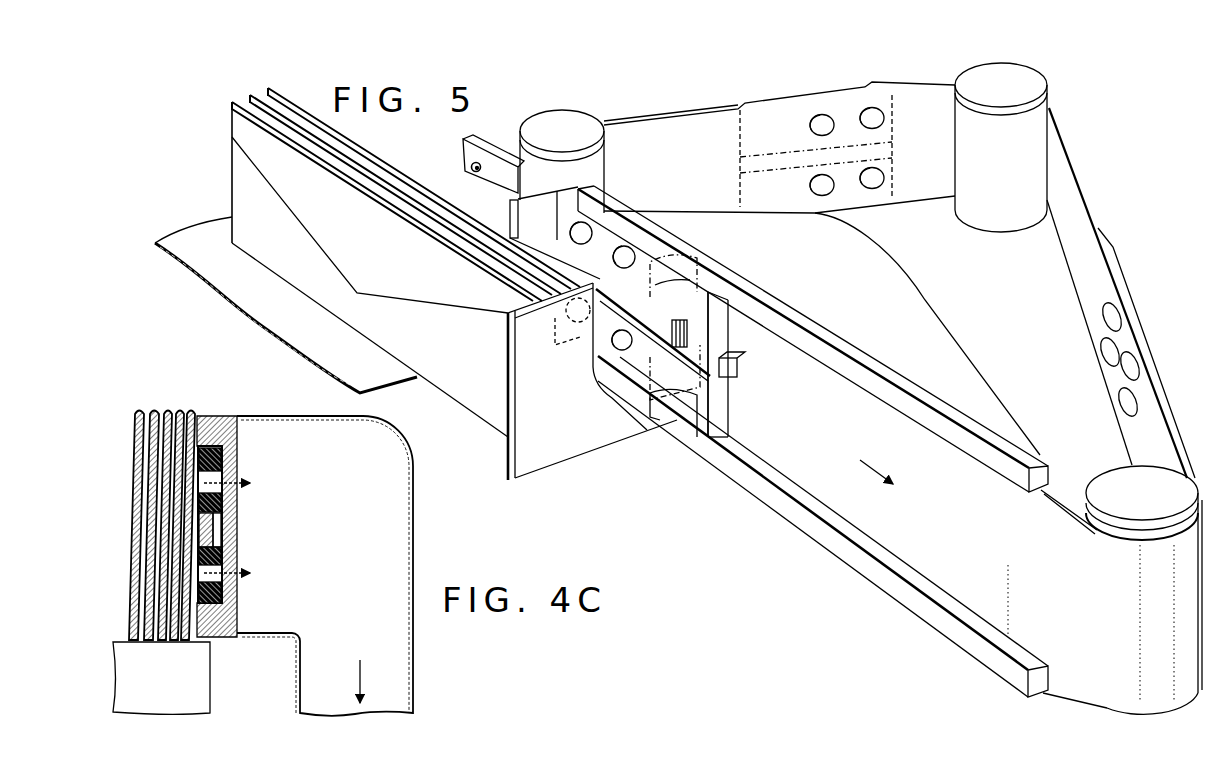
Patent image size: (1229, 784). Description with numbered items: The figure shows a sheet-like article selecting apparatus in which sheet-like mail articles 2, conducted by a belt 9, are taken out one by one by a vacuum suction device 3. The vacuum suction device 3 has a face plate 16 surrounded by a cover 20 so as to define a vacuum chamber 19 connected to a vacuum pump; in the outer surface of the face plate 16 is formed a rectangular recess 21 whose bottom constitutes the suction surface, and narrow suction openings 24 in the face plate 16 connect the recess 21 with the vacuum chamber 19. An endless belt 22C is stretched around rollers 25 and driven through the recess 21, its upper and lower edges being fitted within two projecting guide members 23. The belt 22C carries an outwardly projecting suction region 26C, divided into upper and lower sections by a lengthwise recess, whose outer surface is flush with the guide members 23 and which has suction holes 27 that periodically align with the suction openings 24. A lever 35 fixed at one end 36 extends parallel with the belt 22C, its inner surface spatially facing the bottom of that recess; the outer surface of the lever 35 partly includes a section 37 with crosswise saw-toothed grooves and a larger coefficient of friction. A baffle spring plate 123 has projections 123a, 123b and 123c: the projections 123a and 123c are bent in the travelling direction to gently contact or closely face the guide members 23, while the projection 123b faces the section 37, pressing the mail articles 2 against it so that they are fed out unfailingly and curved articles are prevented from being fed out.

In FIG. 5, the sheet-like mail articles 2 is at (386, 171).
In FIG. 4C, the sheet-like mail articles 2 is at (153, 406).
In FIG. 5, the vacuum suction device 3 is at (914, 299).
In FIG. 4C, the vacuum suction device 3 is at (335, 547).
In FIG. 5, the belt 9 is at (300, 338).
In FIG. 4C, the belt 9 is at (205, 700).
In FIG. 4C, the face plate 16 is at (272, 455).
In FIG. 4C, the vacuum chamber 19 is at (337, 420).
In FIG. 4C, the cover 20 is at (302, 417).
In FIG. 4C, the rectangular recess 21 is at (221, 464).
In FIG. 5, the endless belt 22C is at (913, 560).
In FIG. 5, the guide members 23 is at (960, 440).
In FIG. 4C, the guide members 23 is at (222, 416).
In FIG. 4C, the suction openings 24 is at (230, 488).
In FIG. 5, the rollers 25 is at (1118, 478).
In FIG. 5, the suction region 26C is at (1122, 272).
In FIG. 5, the suction holes 27 is at (882, 128).
In FIG. 4C, the suction holes 27 is at (215, 512).
In FIG. 5, the lever 35 is at (738, 372).
In FIG. 4C, the lever 35 is at (216, 530).
In FIG. 5, the end of lever 36 is at (474, 172).
In FIG. 5, the section having a larger coefficient of friction 37 is at (690, 336).
In FIG. 5, the baffle spring plate 123 is at (568, 455).
In FIG. 5, the projection 123a is at (712, 272).
In FIG. 5, the projection 123b is at (675, 372).
In FIG. 5, the projection 123c is at (673, 430).